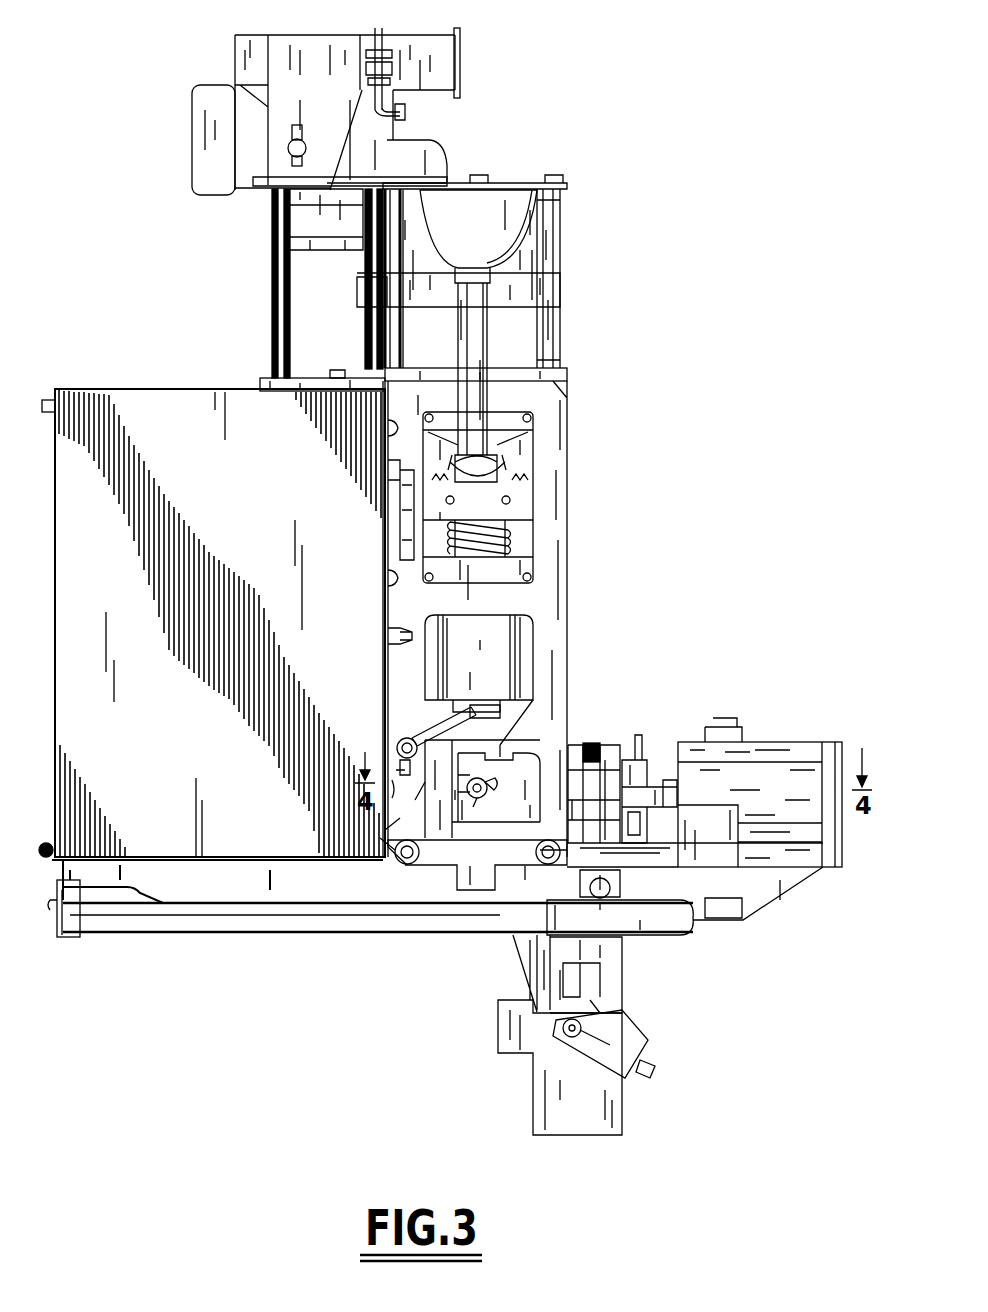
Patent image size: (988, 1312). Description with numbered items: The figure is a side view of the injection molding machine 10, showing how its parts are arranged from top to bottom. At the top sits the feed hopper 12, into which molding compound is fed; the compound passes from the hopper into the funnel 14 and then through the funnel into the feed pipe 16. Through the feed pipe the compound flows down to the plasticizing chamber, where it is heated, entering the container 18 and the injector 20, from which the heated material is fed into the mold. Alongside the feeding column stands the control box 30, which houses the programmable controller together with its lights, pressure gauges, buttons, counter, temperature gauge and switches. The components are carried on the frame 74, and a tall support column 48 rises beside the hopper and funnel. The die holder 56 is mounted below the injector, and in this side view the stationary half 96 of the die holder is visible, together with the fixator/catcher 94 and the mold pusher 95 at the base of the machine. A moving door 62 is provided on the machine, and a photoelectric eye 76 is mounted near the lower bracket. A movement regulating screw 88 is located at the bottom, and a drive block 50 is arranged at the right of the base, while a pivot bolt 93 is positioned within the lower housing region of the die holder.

The injection molding machine 10 is at (614, 46).
The feed hopper 12 is at (235, 35).
The funnel 14 is at (462, 232).
The feed pipe 16 is at (495, 337).
The container 18 is at (503, 494).
The injector 20 is at (480, 668).
The control box 30 is at (158, 389).
The support column 48 is at (537, 258).
The drive block 50 is at (767, 777).
The die holder 56 is at (500, 750).
The moving door 62 is at (523, 950).
The frame 74 is at (552, 591).
The photoelectric eye 76 is at (567, 967).
The movement regulating screw 88 is at (543, 1087).
The pivot bolt 93 is at (492, 796).
The fixator/catcher 94 is at (378, 866).
The mold pusher 95 is at (473, 805).
The stationary half of the die holder 96 is at (410, 735).